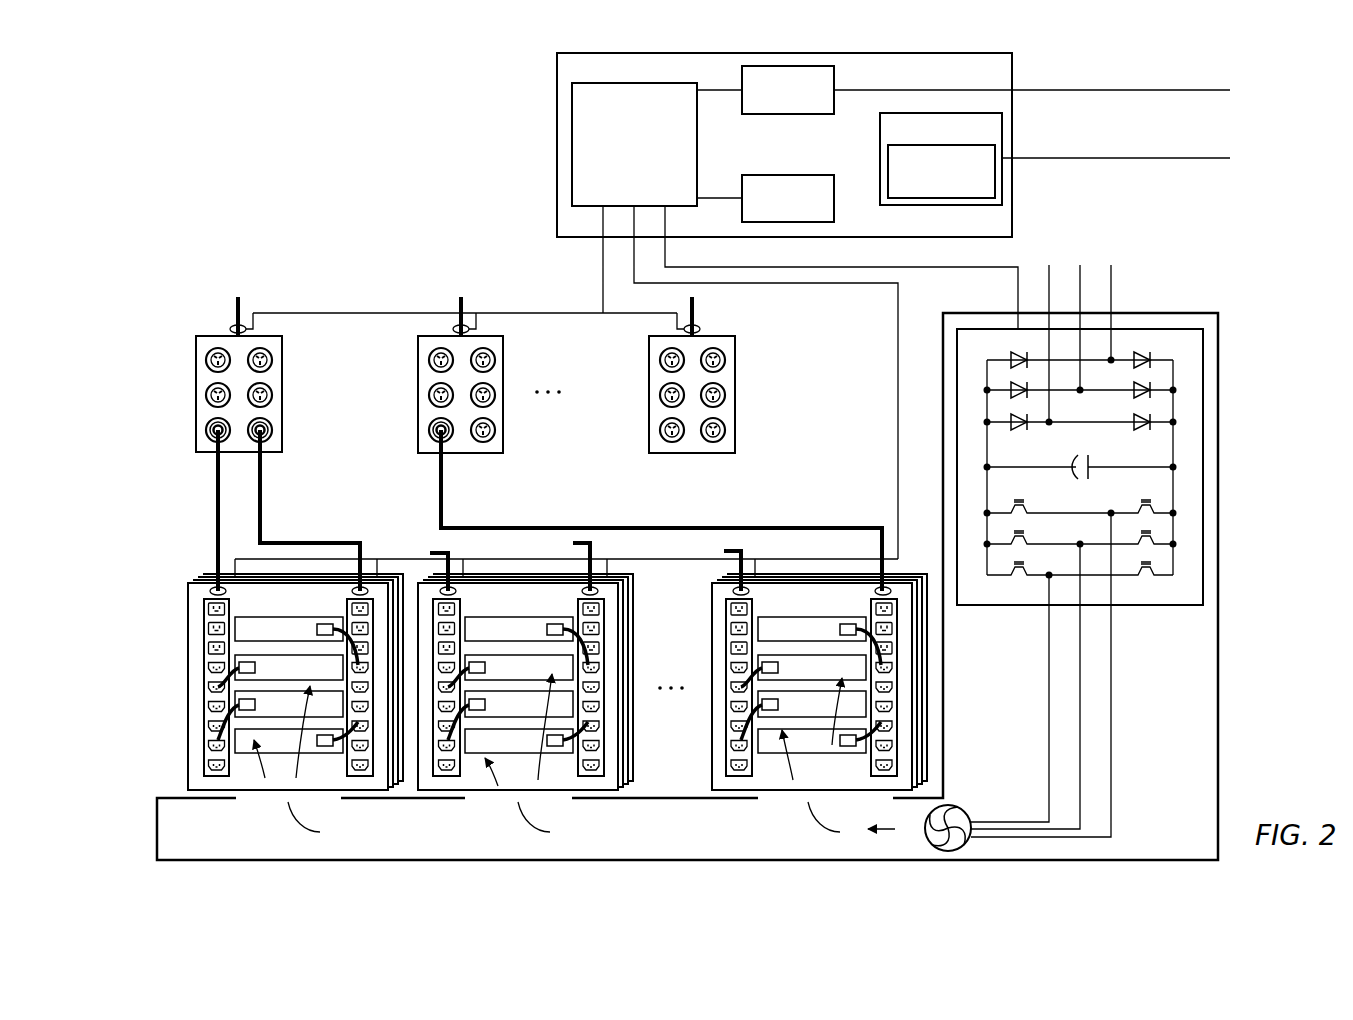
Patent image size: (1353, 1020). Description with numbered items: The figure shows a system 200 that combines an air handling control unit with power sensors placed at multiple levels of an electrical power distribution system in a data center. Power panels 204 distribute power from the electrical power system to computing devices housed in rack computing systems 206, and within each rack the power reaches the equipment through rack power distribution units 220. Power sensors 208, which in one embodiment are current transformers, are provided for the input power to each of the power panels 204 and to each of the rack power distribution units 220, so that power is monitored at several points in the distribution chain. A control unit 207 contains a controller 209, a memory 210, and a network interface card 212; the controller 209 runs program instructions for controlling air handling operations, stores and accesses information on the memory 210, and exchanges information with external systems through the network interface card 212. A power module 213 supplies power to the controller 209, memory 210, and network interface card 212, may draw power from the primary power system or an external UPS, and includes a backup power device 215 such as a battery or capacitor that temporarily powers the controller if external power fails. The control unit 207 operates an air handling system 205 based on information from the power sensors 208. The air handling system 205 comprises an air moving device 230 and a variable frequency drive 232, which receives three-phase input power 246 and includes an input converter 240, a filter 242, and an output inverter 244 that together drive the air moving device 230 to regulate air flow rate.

The system 200 is at (421, 171).
The power panels 204 is at (206, 306).
The air handling system 205 is at (705, 562).
The rack computing systems 206 is at (546, 121).
The control unit 207 is at (893, 145).
The power sensors 208 is at (714, 328).
The controller 209 is at (634, 144).
The memory 210 is at (788, 198).
The network interface card 212 is at (788, 90).
The power module 213 is at (880, 139).
The backup power device 215 is at (888, 162).
The rack power distribution units 220 is at (204, 646).
The air moving device 230 is at (950, 806).
The variable frequency drive 232 is at (1148, 605).
The input converter 240 is at (1190, 390).
The filter 242 is at (1190, 467).
The output inverter 244 is at (1190, 544).
The three-phase input power 246 is at (1122, 291).